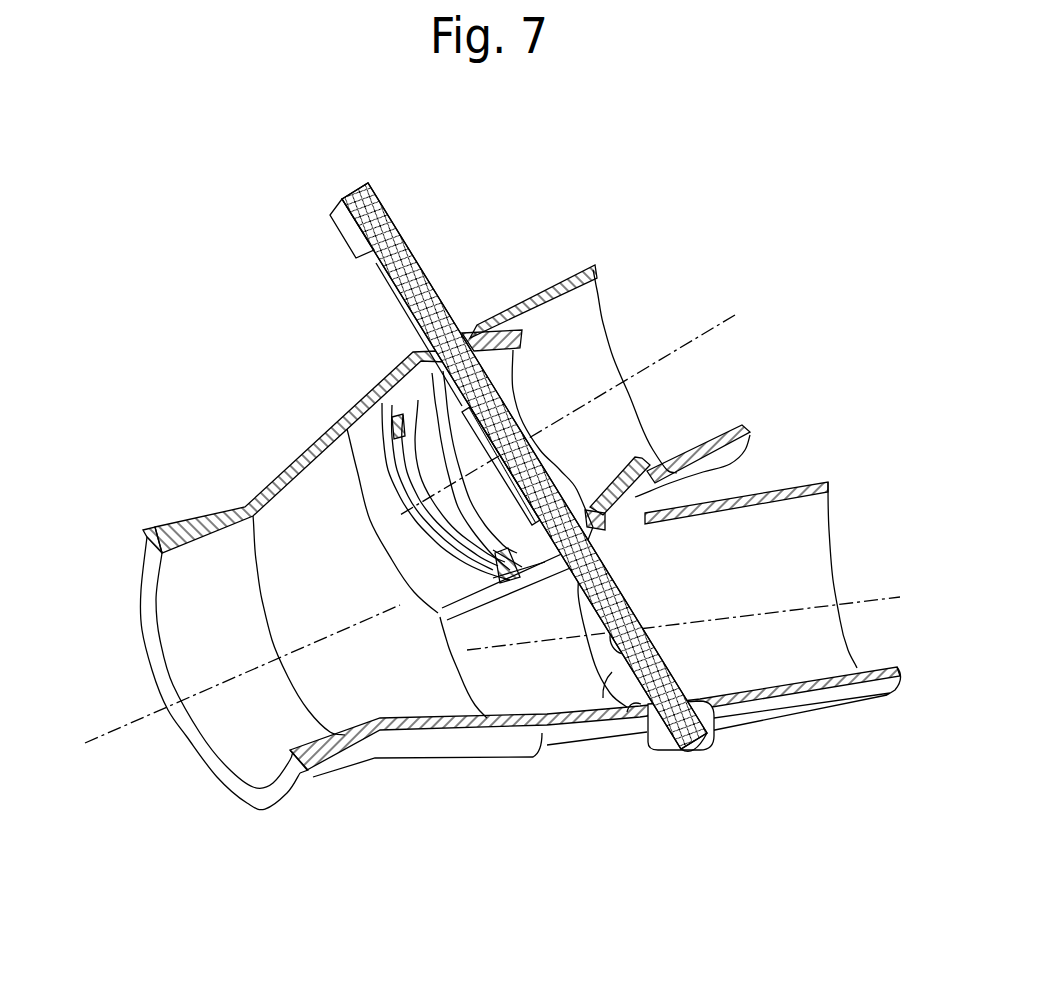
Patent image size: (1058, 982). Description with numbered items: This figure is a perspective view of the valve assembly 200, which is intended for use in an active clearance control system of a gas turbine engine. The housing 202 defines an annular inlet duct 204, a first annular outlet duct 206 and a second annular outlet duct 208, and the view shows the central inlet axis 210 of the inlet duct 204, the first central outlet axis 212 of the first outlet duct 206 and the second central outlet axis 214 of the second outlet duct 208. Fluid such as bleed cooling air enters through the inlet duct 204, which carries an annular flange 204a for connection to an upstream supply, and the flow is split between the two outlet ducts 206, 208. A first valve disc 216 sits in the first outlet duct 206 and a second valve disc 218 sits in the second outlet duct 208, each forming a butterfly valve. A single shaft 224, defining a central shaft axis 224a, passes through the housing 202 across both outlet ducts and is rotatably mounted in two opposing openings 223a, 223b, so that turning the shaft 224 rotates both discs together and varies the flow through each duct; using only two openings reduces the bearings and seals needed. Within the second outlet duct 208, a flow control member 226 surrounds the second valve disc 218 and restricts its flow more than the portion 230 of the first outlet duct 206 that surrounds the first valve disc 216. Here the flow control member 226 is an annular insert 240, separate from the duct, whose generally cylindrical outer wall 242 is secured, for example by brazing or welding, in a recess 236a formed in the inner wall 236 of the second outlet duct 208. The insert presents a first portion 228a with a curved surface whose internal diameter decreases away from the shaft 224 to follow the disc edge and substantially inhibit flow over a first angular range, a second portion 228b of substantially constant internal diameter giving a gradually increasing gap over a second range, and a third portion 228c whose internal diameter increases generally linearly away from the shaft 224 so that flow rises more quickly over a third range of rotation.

The valve assembly 200 is at (172, 360).
The housing 202 is at (188, 530).
The annular inlet duct 204 is at (230, 733).
The annular flange 204a is at (270, 800).
The first annular outlet duct 206 is at (803, 573).
The second annular outlet duct 208 is at (590, 320).
The central inlet axis 210 is at (90, 740).
The first central outlet axis 212 is at (880, 600).
The second central outlet axis 214 is at (735, 316).
The first valve disc 216 is at (610, 678).
The second valve disc 218 is at (497, 497).
The opening 223a is at (712, 710).
The opening 223b is at (470, 348).
The shaft 224 is at (377, 203).
The central shaft axis 224a is at (352, 190).
The flow control member 226 is at (506, 325).
The first portion 228a is at (410, 400).
The second portion 228b is at (393, 418).
The third portion 228c is at (403, 477).
The portion of the first outlet duct 230 is at (627, 708).
The inner wall 236 is at (715, 425).
The recess 236a is at (702, 475).
The annular insert 240 is at (545, 338).
The outer wall 242 is at (606, 528).